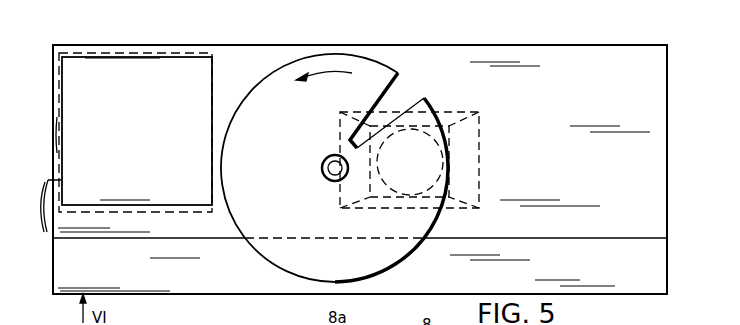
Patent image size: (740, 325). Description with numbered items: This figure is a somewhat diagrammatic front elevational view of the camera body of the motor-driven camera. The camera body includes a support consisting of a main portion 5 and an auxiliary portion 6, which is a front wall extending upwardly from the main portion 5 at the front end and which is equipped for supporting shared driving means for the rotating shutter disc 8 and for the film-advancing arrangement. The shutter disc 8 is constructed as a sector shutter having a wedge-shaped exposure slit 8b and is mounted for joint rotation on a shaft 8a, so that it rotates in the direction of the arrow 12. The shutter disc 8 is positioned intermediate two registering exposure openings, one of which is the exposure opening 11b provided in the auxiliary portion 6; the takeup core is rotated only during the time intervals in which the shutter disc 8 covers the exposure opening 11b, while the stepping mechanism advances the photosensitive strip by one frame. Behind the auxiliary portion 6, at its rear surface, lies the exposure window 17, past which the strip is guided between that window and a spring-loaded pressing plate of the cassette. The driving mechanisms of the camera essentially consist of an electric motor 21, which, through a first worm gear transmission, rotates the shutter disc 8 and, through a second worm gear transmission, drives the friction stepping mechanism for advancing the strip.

The main portion 5 is at (149, 294).
The auxiliary portion 6 is at (563, 46).
The shutter disc 8 is at (400, 256).
The shaft 8a is at (321, 169).
The exposure slit 8b is at (416, 100).
The exposure opening 11b is at (439, 160).
The arrow 12 is at (325, 74).
The exposure window 17 is at (476, 128).
The electric motor 21 is at (193, 91).